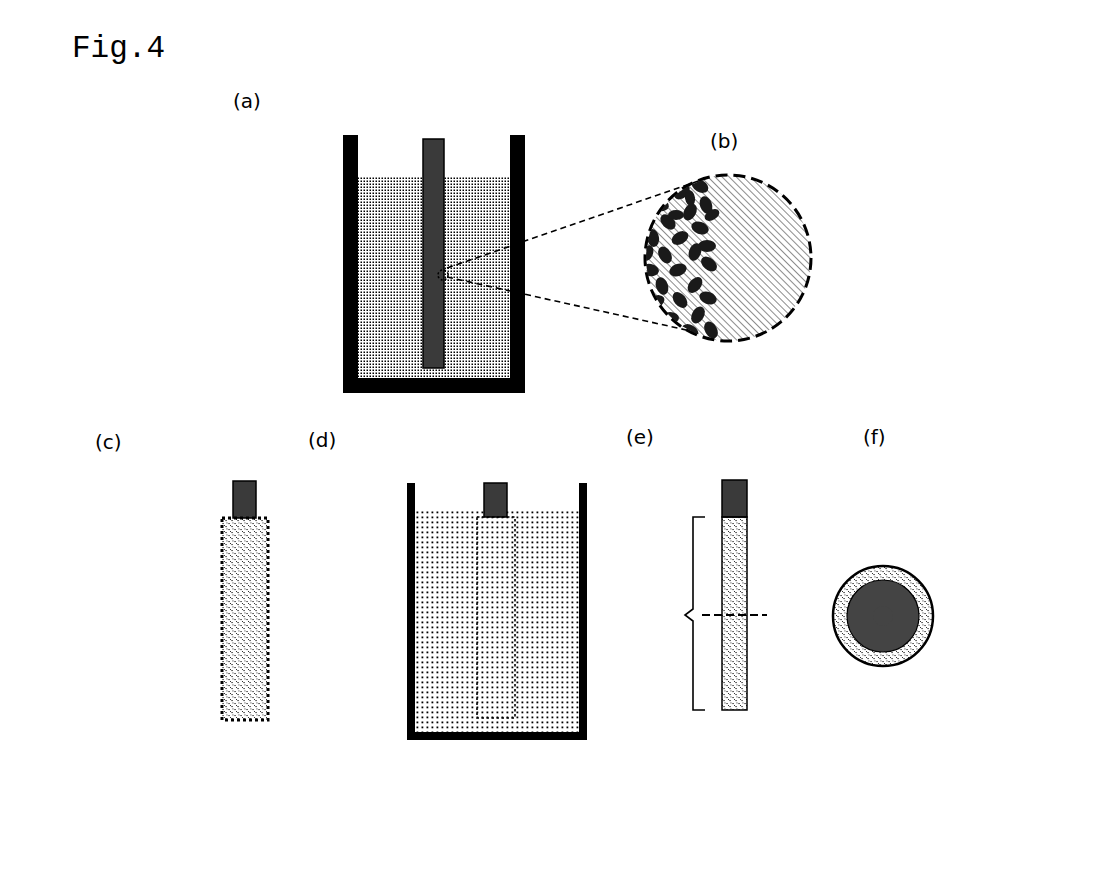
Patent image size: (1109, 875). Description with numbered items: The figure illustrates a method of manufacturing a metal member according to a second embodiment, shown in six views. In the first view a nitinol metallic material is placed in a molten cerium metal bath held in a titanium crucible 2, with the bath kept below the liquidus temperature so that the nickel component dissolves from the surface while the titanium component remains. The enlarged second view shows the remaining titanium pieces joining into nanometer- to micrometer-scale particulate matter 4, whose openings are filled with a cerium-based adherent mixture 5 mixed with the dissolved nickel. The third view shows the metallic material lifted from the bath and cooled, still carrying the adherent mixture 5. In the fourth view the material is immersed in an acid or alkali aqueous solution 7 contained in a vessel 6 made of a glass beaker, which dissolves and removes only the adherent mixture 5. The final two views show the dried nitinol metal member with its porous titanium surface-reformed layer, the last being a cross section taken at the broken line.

The titanium crucible 2 is at (348, 346).
The particulate matter 4 is at (710, 273).
The adherent mixture 5 is at (235, 622).
The vessel 6 is at (410, 694).
The acid or alkali aqueous solution 7 is at (433, 608).